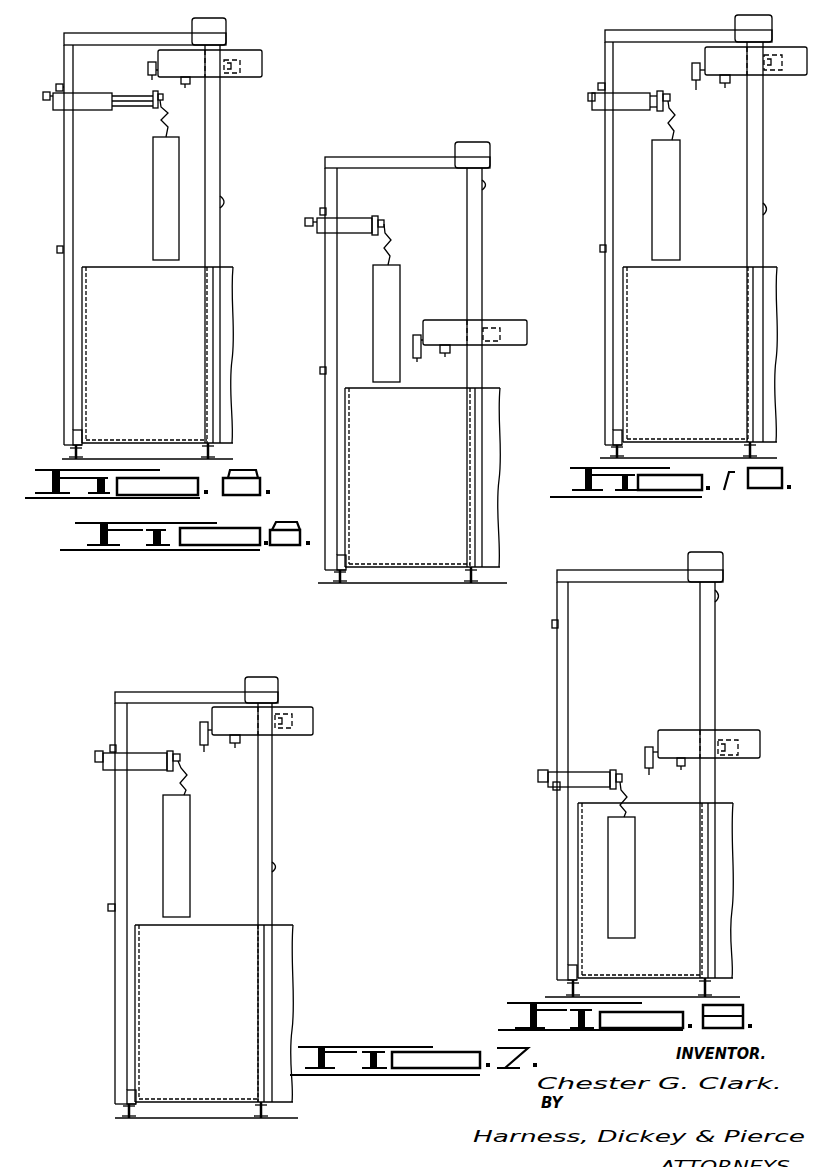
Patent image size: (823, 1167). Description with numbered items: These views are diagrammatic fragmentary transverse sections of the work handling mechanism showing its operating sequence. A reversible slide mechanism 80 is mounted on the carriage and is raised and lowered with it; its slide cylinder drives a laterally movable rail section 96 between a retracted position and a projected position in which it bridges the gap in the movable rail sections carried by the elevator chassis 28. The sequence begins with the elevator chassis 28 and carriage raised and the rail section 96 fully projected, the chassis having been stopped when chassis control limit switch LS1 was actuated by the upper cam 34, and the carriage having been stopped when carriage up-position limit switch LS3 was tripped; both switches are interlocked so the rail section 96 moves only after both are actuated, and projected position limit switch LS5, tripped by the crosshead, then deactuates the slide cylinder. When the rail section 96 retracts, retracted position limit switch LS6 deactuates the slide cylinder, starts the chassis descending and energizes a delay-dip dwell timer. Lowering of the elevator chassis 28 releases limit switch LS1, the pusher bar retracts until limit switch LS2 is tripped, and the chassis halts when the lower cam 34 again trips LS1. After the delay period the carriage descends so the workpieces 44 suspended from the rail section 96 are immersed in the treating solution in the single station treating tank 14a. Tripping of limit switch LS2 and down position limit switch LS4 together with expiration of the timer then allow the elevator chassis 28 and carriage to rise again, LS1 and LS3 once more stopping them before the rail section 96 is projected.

In FIG. 6, the single station treating tank 14a is at (195, 351).
In FIG. 8, the single station treating tank 14a is at (460, 452).
In FIG. 10, the single station treating tank 14a is at (727, 372).
In FIG. 7, the single station treating tank 14a is at (245, 992).
In FIG. 9, the single station treating tank 14a is at (693, 897).
In FIG. 6, the elevator chassis 28 is at (268, 63).
In FIG. 8, the elevator chassis 28 is at (532, 333).
In FIG. 10, the elevator chassis 28 is at (780, 76).
In FIG. 7, the elevator chassis 28 is at (320, 717).
In FIG. 9, the elevator chassis 28 is at (750, 726).
In FIG. 6, the cam 34 is at (222, 205).
In FIG. 8, the cam 34 is at (487, 184).
In FIG. 10, the cam 34 is at (766, 211).
In FIG. 7, the cam 34 is at (277, 868).
In FIG. 9, the cam 34 is at (720, 597).
In FIG. 6, the workpieces 44 is at (162, 206).
In FIG. 8, the workpieces 44 is at (395, 291).
In FIG. 10, the workpieces 44 is at (668, 208).
In FIG. 7, the workpieces 44 is at (178, 868).
In FIG. 9, the workpieces 44 is at (628, 867).
In FIG. 6, the reversible slide mechanism 80 is at (101, 113).
In FIG. 8, the reversible slide mechanism 80 is at (365, 216).
In FIG. 10, the reversible slide mechanism 80 is at (600, 115).
In FIG. 7, the reversible slide mechanism 80 is at (144, 748).
In FIG. 9, the reversible slide mechanism 80 is at (588, 766).
In FIG. 6, the laterally movable rail section 96 is at (160, 112).
In FIG. 8, the laterally movable rail section 96 is at (386, 233).
In FIG. 10, the laterally movable rail section 96 is at (662, 110).
In FIG. 7, the laterally movable rail section 96 is at (172, 772).
In FIG. 9, the laterally movable rail section 96 is at (617, 785).
In FIG. 6, the chassis control limit switch LS1 is at (243, 59).
In FIG. 10, the chassis control limit switch LS1 is at (783, 55).
In FIG. 7, the chassis control limit switch LS1 is at (298, 712).
In FIG. 9, the chassis control limit switch LS1 is at (736, 758).
In FIG. 6, the limit switch LS2 is at (187, 86).
In FIG. 8, the limit switch LS2 is at (452, 352).
In FIG. 10, the limit switch LS2 is at (728, 86).
In FIG. 7, the limit switch LS2 is at (235, 744).
In FIG. 9, the limit switch LS2 is at (680, 768).
In FIG. 6, the carriage up-position limit switch LS3 is at (59, 84).
In FIG. 8, the carriage up-position limit switch LS3 is at (320, 210).
In FIG. 10, the carriage up-position limit switch LS3 is at (600, 84).
In FIG. 7, the carriage up-position limit switch LS3 is at (110, 746).
In FIG. 9, the carriage up-position limit switch LS3 is at (552, 625).
In FIG. 6, the down position limit switch LS4 is at (59, 254).
In FIG. 8, the down position limit switch LS4 is at (318, 371).
In FIG. 10, the down position limit switch LS4 is at (600, 250).
In FIG. 7, the down position limit switch LS4 is at (108, 908).
In FIG. 9, the down position limit switch LS4 is at (554, 790).
In FIG. 6, the projected position limit switch LS5 is at (148, 72).
In FIG. 8, the projected position limit switch LS5 is at (420, 362).
In FIG. 10, the projected position limit switch LS5 is at (692, 72).
In FIG. 7, the projected position limit switch LS5 is at (202, 752).
In FIG. 9, the projected position limit switch LS5 is at (648, 776).
In FIG. 6, the retracted position limit switch LS6 is at (46, 100).
In FIG. 8, the retracted position limit switch LS6 is at (306, 222).
In FIG. 10, the retracted position limit switch LS6 is at (586, 98).
In FIG. 7, the retracted position limit switch LS6 is at (95, 757).
In FIG. 9, the retracted position limit switch LS6 is at (538, 774).